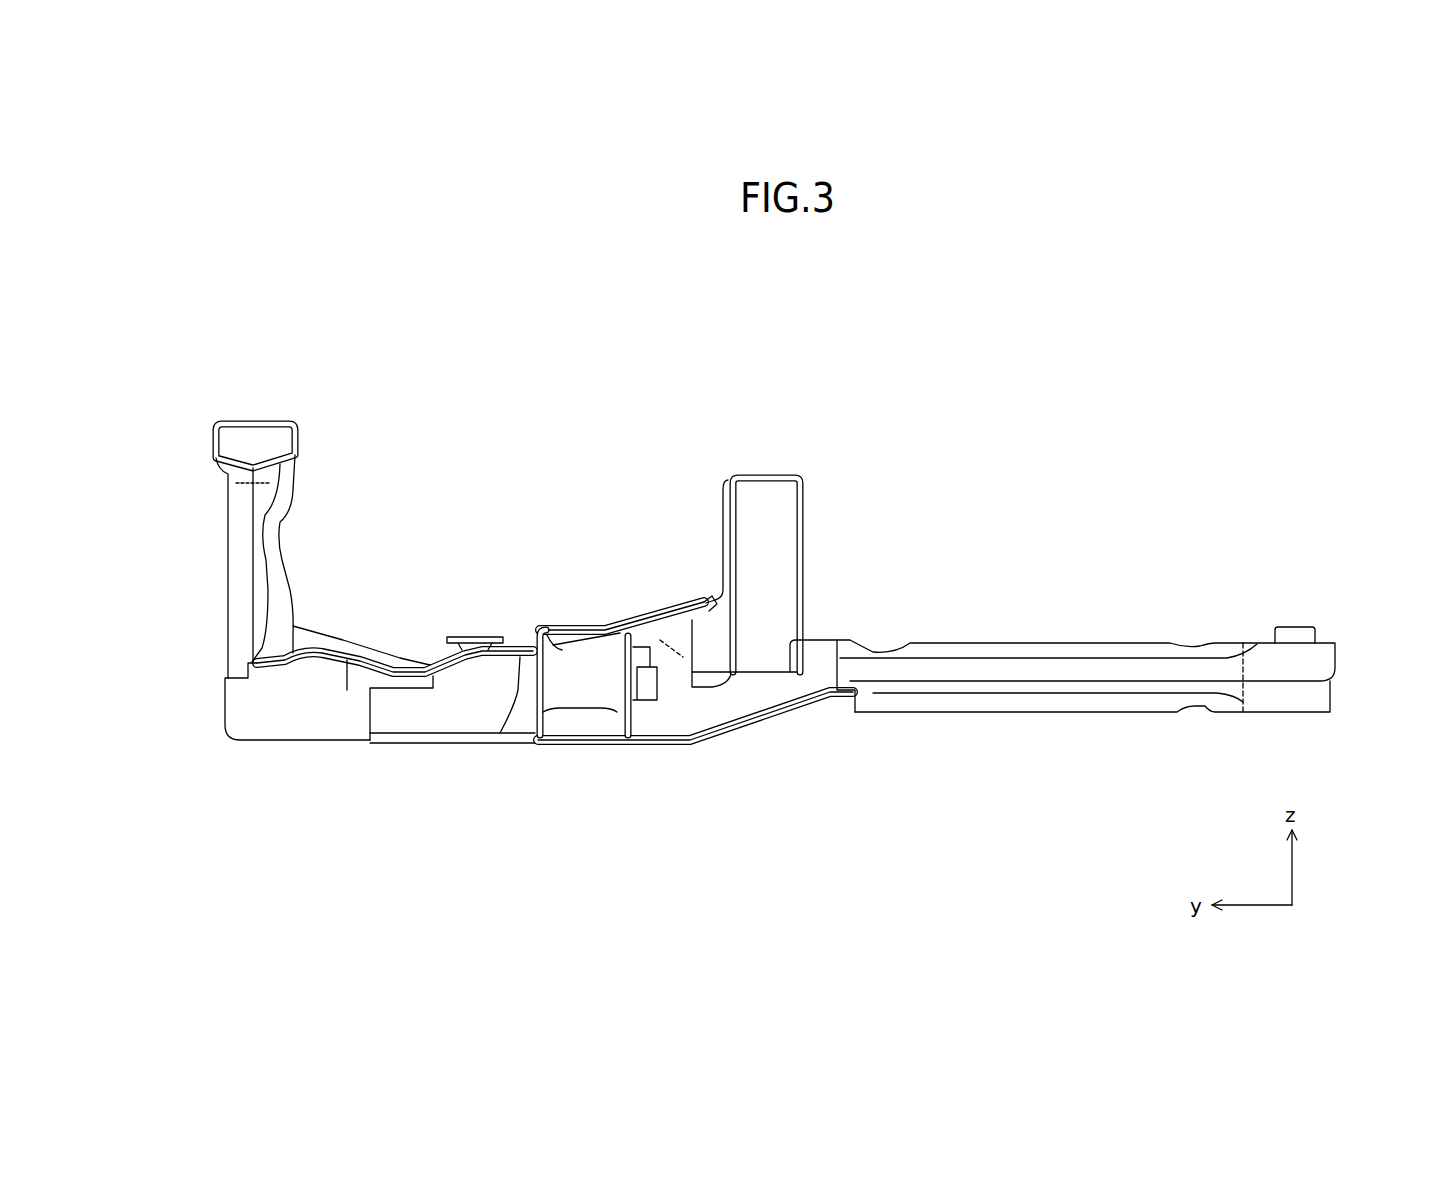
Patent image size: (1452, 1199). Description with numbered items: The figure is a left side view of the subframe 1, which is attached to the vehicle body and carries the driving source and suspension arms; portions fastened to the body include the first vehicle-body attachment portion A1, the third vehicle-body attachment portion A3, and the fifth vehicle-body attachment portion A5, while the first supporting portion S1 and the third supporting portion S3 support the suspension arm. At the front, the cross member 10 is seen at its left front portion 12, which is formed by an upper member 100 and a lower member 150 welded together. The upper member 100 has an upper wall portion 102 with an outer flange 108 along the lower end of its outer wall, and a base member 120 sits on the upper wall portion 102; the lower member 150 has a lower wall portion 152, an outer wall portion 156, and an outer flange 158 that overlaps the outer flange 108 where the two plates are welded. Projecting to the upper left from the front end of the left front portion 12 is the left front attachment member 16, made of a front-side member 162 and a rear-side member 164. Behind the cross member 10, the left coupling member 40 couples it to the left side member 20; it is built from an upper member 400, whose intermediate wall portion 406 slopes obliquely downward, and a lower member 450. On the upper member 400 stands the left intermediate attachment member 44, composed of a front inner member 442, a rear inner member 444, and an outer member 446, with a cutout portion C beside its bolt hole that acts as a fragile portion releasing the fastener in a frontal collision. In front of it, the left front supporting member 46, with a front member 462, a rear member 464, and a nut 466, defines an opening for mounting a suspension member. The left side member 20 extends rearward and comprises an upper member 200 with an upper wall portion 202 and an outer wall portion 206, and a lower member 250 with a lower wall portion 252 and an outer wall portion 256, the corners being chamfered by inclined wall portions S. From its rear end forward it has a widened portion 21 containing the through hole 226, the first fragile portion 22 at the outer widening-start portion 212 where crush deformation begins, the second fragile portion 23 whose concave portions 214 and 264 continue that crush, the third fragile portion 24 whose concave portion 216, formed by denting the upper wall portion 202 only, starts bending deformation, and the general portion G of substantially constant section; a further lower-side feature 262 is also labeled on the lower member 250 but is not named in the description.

The subframe 1 is at (936, 395).
The cross member 10 is at (372, 612).
The left front portion 12 is at (298, 730).
The left front attachment member 16 is at (276, 416).
The left side member 20 is at (1098, 565).
The widened portion 21 is at (1340, 697).
The first fragile portion 22 is at (1231, 640).
The second fragile portion 23 is at (1178, 640).
The third fragile portion 24 is at (888, 650).
The left coupling member 40 is at (553, 600).
The left intermediate attachment member 44 is at (804, 460).
The left front supporting member 46 is at (611, 607).
The upper member 100 is at (348, 638).
The upper wall portion 102 is at (305, 628).
The outer flange 108 is at (378, 650).
The base member 120 is at (465, 636).
The lower member 150 is at (254, 738).
The lower wall portion 152 is at (264, 745).
The outer wall portion 156 is at (233, 723).
The outer flange 158 is at (347, 690).
The front-side member 162 is at (243, 512).
The rear-side member 164 is at (278, 531).
The upper member 200 is at (1036, 634).
The upper wall portion 202 is at (1076, 656).
The outer wall portion 206 is at (1025, 670).
The outer widening-start portion 212 is at (1246, 675).
The concave portion 214 is at (1194, 642).
The concave portion 216 is at (870, 648).
The through hole 226 is at (1291, 633).
The lower member 250 is at (1080, 719).
The lower wall portion 252 is at (1020, 715).
The outer wall portion 256 is at (1152, 690).
The bottom recess 262 is at (1245, 692).
The concave portion 264 is at (1188, 722).
The upper member 400 is at (820, 620).
The intermediate wall portion 406 is at (425, 720).
The front inner member 442 is at (736, 474).
The rear inner member 444 is at (808, 520).
The outer member 446 is at (763, 657).
The lower member 450 is at (753, 744).
The front member 462 is at (510, 723).
The rear member 464 is at (612, 720).
The nut 466 is at (655, 672).
The first vehicle-body attachment portion A1 is at (226, 405).
The third vehicle-body attachment portion A3 is at (757, 445).
The fifth vehicle-body attachment portion A5 is at (1342, 668).
The cutout portion C is at (776, 476).
The general portion G is at (947, 720).
The inclined wall portions S is at (1126, 650).
The first supporting portion S1 is at (585, 700).
The third supporting portion S3 is at (955, 613).